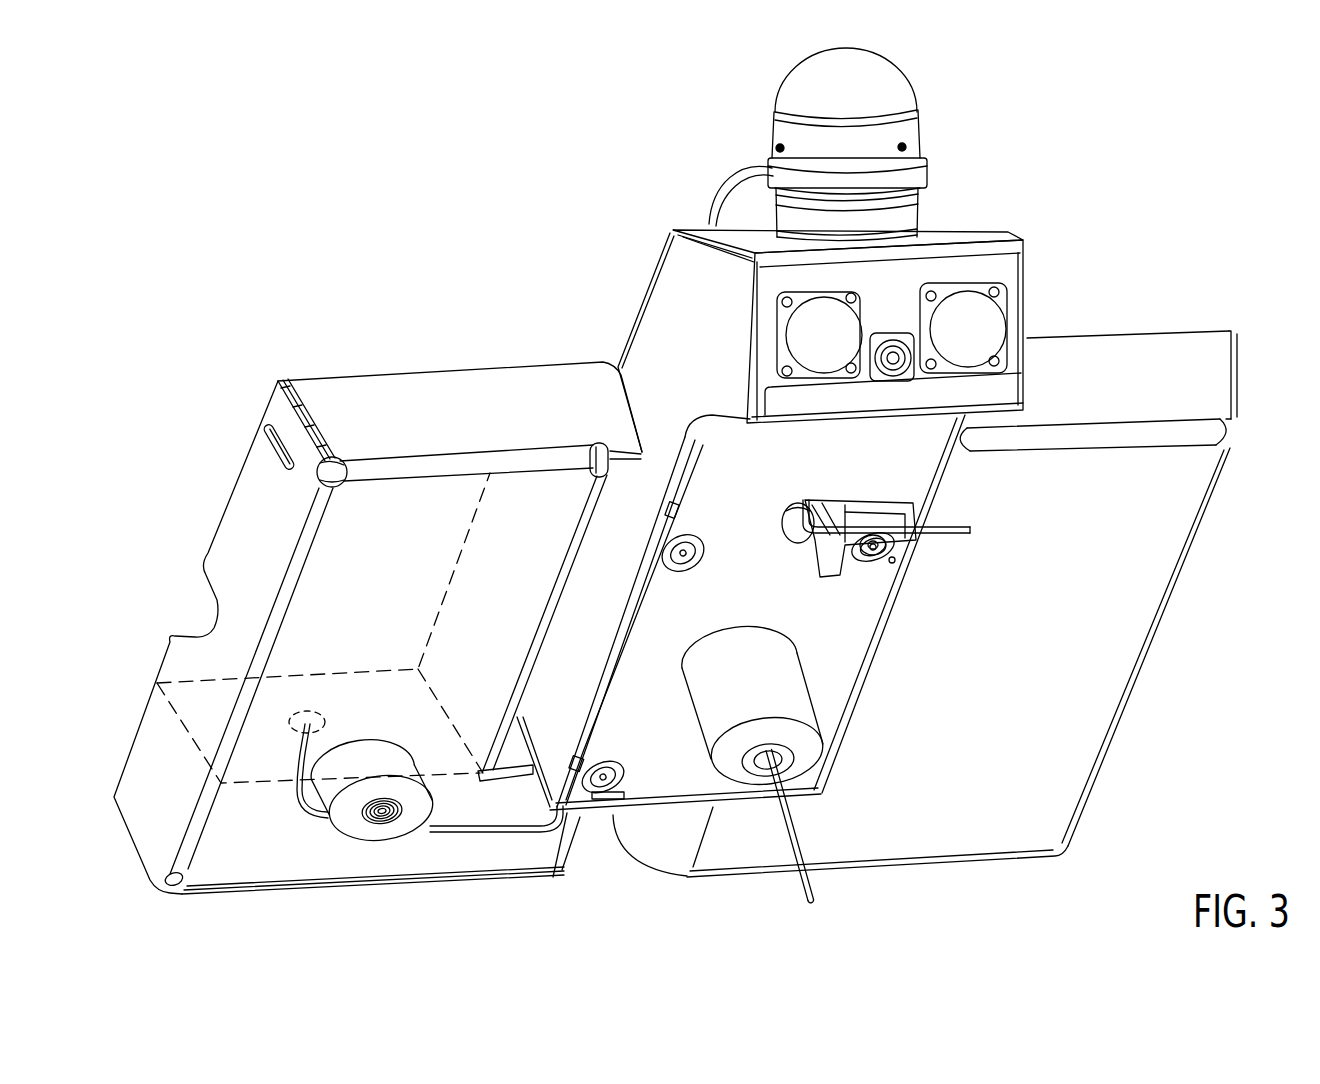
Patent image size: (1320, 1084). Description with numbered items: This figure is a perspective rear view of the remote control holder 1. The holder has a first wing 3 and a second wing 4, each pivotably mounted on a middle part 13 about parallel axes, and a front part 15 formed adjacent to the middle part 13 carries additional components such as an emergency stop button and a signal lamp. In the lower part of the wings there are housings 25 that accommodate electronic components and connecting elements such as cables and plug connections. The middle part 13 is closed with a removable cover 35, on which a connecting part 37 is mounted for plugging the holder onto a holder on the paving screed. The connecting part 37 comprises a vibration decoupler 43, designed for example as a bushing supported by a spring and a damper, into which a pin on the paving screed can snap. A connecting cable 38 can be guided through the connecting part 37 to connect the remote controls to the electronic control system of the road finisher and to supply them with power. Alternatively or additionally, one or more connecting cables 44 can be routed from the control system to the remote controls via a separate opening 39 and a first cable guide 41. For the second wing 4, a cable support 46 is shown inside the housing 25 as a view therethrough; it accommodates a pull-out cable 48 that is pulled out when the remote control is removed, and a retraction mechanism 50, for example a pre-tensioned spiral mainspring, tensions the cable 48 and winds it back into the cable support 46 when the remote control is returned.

The remote control holder 1 is at (206, 254).
The first wing 3 is at (999, 646).
The second wing 4 is at (394, 648).
The middle part 13 is at (572, 615).
The front part 15 is at (977, 224).
The housing 25 is at (289, 861).
The removable cover 35 is at (735, 575).
The connecting part 37 is at (735, 682).
The connecting cable 38 is at (803, 893).
The separate opening 39 is at (797, 517).
The first cable guide 41 is at (827, 557).
The vibration decoupler 43 is at (748, 758).
The connecting cable 44 is at (953, 538).
The cable support 46 is at (357, 840).
The pull-out cable 48 is at (293, 788).
The retraction mechanism 50 is at (382, 822).